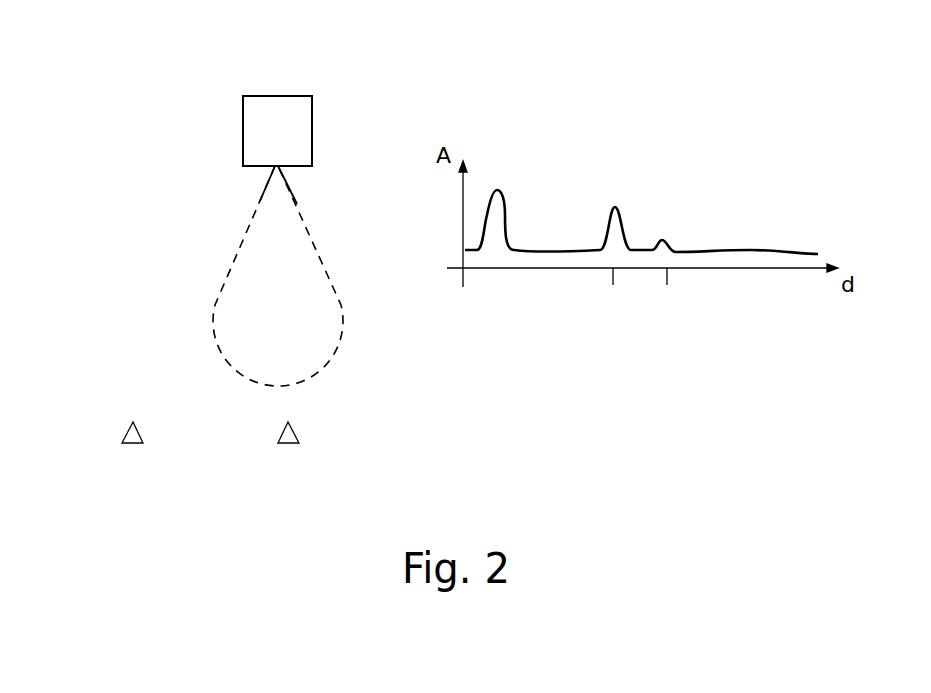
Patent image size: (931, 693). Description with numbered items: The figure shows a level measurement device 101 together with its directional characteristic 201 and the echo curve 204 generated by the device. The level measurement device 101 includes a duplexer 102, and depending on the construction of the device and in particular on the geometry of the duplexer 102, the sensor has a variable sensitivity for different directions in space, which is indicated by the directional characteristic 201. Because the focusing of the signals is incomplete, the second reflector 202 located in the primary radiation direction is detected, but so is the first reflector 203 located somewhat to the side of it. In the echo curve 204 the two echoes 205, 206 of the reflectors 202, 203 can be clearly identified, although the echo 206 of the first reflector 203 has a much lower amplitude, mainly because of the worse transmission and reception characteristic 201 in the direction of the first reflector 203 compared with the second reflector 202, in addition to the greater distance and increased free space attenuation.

The level measurement device 101 is at (270, 96).
The duplexer 102 is at (293, 183).
The directional characteristic 201 is at (214, 307).
The reflector R2 202 is at (299, 435).
The reflector R1 203 is at (145, 437).
The echo curve 204 is at (642, 184).
The echo of reflector R2 205 is at (614, 207).
The echo of reflector R1 206 is at (662, 238).